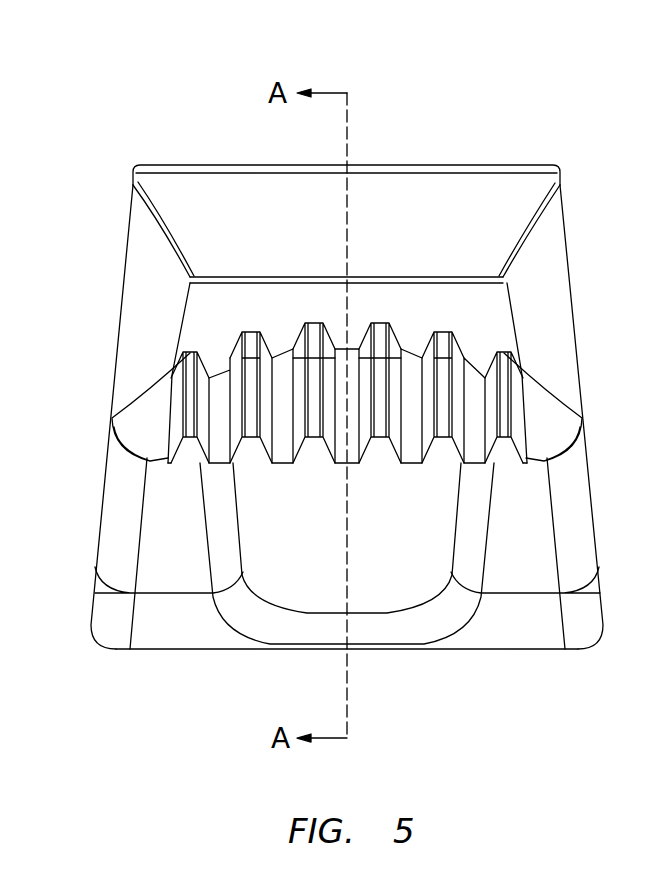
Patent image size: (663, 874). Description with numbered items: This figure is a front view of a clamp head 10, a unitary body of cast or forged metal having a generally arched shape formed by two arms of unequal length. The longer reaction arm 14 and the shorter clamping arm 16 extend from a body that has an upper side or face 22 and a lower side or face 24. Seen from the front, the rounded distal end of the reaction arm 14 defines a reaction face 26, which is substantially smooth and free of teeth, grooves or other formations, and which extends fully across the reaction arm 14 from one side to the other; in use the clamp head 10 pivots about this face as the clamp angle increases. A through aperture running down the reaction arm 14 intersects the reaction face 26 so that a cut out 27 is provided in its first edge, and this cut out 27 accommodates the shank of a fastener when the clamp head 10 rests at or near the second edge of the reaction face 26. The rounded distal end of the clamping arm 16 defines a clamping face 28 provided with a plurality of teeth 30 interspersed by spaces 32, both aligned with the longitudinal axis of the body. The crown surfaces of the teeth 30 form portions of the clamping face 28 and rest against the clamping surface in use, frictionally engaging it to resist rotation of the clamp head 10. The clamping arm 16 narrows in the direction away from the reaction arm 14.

The clamp head 10 is at (541, 98).
The reaction arm 14 is at (540, 532).
The clamping arm 16 is at (142, 438).
The upper side or face 22 is at (207, 165).
The lower side or face 24 is at (153, 555).
The reaction face 26 is at (162, 652).
The cut out 27 is at (307, 615).
The clamping face 28 is at (320, 467).
The teeth 30 is at (220, 360).
The spaces 32 is at (247, 320).